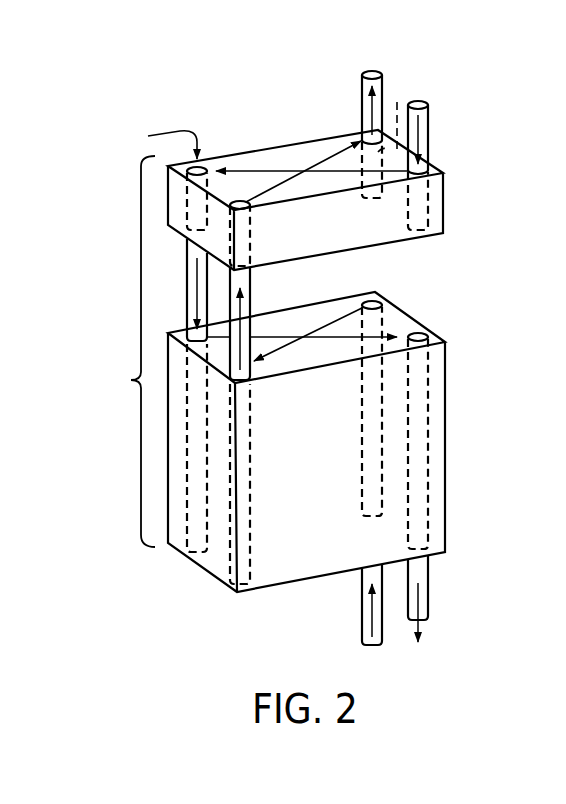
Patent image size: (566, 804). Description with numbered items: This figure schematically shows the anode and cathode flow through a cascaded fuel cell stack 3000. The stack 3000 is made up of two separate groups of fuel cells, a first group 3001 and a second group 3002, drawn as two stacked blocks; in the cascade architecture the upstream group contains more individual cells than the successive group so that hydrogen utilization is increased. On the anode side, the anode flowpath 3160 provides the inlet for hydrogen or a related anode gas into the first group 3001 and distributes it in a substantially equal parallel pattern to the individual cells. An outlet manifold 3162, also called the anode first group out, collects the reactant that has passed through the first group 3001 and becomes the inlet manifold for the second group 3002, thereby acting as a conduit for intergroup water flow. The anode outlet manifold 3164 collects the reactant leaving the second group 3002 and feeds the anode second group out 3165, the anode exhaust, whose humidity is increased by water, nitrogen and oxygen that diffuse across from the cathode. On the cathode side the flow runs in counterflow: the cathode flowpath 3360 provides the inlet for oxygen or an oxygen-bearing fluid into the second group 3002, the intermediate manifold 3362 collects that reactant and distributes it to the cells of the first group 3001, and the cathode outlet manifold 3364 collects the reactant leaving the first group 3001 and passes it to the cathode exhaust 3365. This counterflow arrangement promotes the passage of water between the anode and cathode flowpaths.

The cascaded fuel cell stack 3000 is at (105, 351).
The first group 3001 is at (446, 404).
The second group 3002 is at (444, 207).
The anode flowpath 3160 is at (362, 593).
The anode outlet manifold (anode first group out) 3162 is at (252, 290).
The anode outlet manifold 3164 is at (397, 102).
The anode second group out (anode exhaust) 3165 is at (362, 96).
The cathode flowpath 3360 is at (430, 139).
The intermediate manifold 3362 is at (185, 272).
The cathode outlet manifold 3364 is at (425, 484).
The cathode exhaust 3365 is at (430, 580).